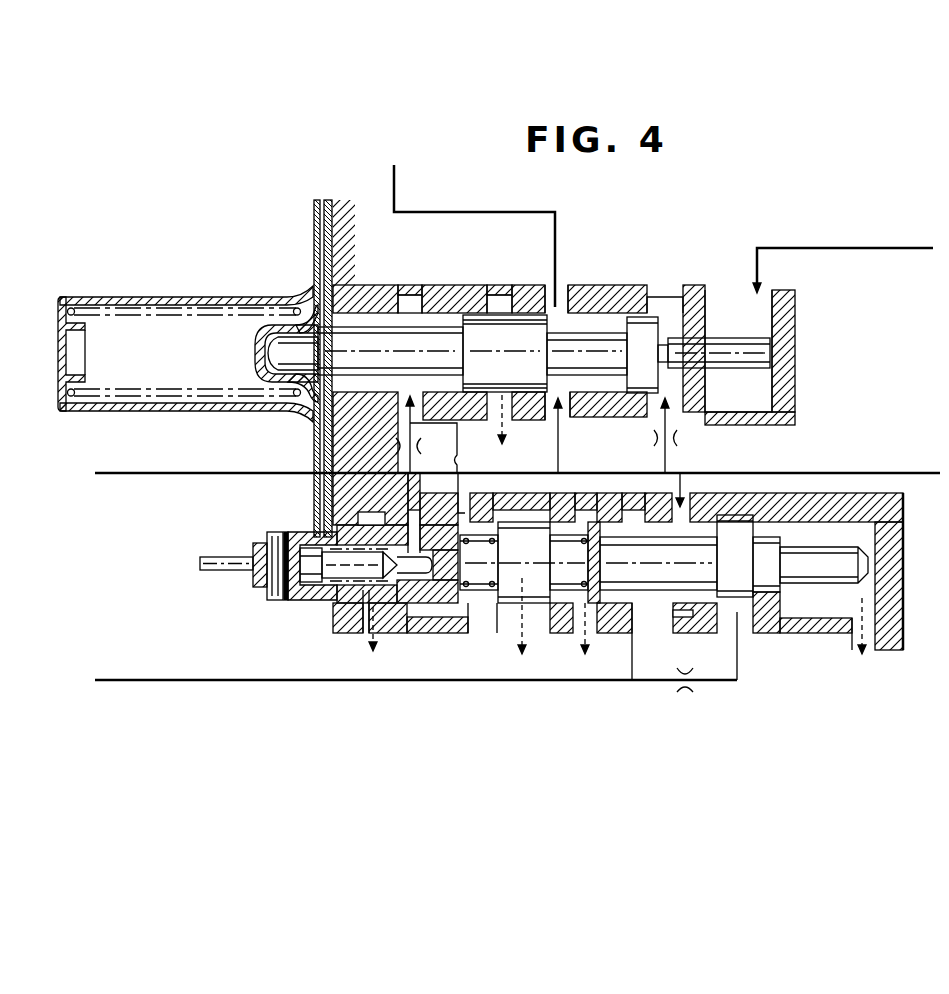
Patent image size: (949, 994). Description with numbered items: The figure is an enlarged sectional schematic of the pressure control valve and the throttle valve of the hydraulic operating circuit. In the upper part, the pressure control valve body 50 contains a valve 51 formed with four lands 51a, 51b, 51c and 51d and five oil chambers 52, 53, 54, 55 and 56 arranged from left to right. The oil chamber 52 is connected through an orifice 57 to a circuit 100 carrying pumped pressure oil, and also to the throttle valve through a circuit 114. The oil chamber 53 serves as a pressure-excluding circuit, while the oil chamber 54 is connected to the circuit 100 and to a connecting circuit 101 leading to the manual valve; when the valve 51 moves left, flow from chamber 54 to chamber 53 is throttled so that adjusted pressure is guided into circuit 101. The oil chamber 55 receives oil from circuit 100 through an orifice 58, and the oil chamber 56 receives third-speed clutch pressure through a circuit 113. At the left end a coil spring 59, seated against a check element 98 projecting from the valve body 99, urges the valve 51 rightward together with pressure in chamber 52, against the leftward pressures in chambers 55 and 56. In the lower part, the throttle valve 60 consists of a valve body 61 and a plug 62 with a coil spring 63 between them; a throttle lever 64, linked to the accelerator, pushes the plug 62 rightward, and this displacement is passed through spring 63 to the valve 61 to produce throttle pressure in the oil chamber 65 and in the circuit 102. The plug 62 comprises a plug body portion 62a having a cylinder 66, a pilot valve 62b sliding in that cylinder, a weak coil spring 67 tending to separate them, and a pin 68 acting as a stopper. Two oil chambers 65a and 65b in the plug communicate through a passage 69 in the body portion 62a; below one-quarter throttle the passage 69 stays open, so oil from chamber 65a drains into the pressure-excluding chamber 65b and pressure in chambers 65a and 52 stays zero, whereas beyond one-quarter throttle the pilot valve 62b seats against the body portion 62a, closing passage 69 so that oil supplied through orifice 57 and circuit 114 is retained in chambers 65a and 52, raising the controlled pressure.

The pressure control valve body 50 is at (575, 356).
The valve 51 is at (519, 340).
The land 51a is at (362, 364).
The land 51b is at (489, 364).
The land 51c is at (628, 365).
The land 51d is at (695, 368).
The oil chamber 52 is at (398, 303).
The oil chamber 53 is at (514, 303).
The oil chamber 54 is at (571, 297).
The oil chamber 55 is at (682, 304).
The oil chamber 56 is at (752, 406).
The orifice 57 is at (392, 434).
The orifice 58 is at (681, 435).
The coil spring 59 is at (179, 308).
The throttle valve 60 is at (552, 576).
The valve body 61 is at (676, 577).
The plug 62 is at (339, 574).
The plug body portion 62a is at (494, 612).
The pilot valve 62b is at (317, 592).
The coil spring 63 is at (527, 580).
The throttle lever 64 is at (200, 565).
The oil chamber 65 is at (640, 603).
The oil chamber 65a is at (417, 521).
The oil chamber 65b is at (387, 605).
The cylinder 66 is at (341, 605).
The coil spring 67 is at (320, 552).
The pin 68 is at (287, 594).
The passage 69 is at (414, 577).
The check element 98 is at (127, 297).
The valve body 99 is at (332, 266).
The circuit 100 is at (135, 476).
The connecting circuit 101 is at (455, 212).
The circuit 102 is at (282, 682).
The circuit 113 is at (812, 247).
The circuit 114 is at (458, 454).